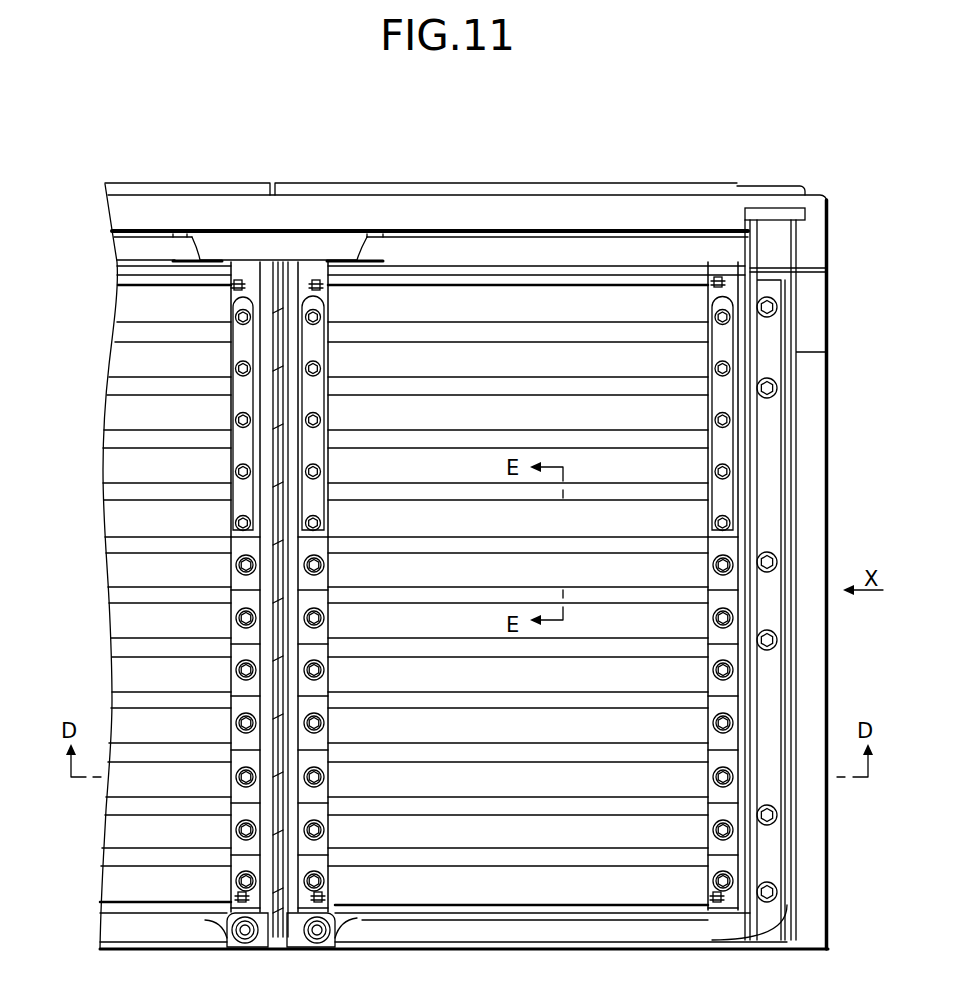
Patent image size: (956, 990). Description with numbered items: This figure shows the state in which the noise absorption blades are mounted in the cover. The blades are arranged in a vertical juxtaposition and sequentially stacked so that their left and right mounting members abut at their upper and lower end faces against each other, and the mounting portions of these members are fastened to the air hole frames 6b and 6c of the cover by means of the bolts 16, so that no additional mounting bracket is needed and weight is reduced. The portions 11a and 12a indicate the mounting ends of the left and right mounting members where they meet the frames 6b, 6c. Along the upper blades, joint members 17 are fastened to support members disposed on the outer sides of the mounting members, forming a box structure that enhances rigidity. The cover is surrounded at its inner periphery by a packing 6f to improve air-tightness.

The packing 6f is at (520, 198).
The frame 6c is at (752, 758).
The frame 6b is at (295, 774).
The joint member 17 is at (278, 370).
The first holding block 11a is at (323, 762).
The second holding block 12a is at (712, 760).
The bolt 16 is at (323, 778).